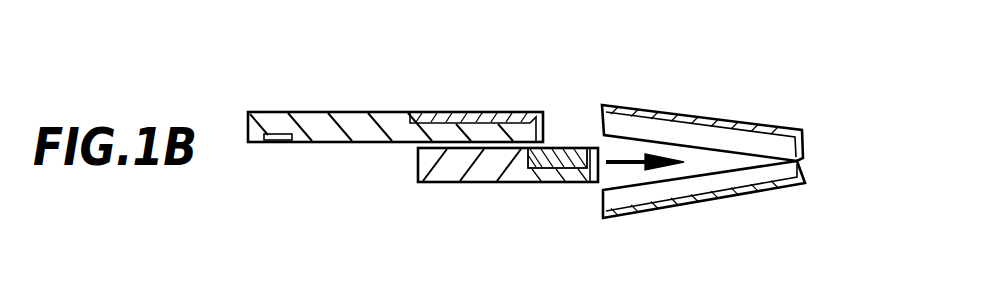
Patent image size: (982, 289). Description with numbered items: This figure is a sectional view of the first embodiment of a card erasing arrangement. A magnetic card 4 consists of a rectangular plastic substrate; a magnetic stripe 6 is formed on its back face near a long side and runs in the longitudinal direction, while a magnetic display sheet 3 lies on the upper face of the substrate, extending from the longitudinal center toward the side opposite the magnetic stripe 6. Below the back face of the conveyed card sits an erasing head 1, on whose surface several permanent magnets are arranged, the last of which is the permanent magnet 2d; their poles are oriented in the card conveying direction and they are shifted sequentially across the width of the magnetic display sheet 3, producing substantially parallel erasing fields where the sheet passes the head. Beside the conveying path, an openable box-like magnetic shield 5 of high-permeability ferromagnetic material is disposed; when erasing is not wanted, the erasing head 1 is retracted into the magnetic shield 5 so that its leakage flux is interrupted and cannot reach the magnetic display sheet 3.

The erasing head 1 is at (500, 193).
The permanent magnet 2d is at (529, 193).
The magnetic display sheet 3 is at (473, 87).
The magnetic card 4 is at (395, 88).
The magnetic shield 5 is at (703, 128).
The magnetic stripe 6 is at (262, 166).